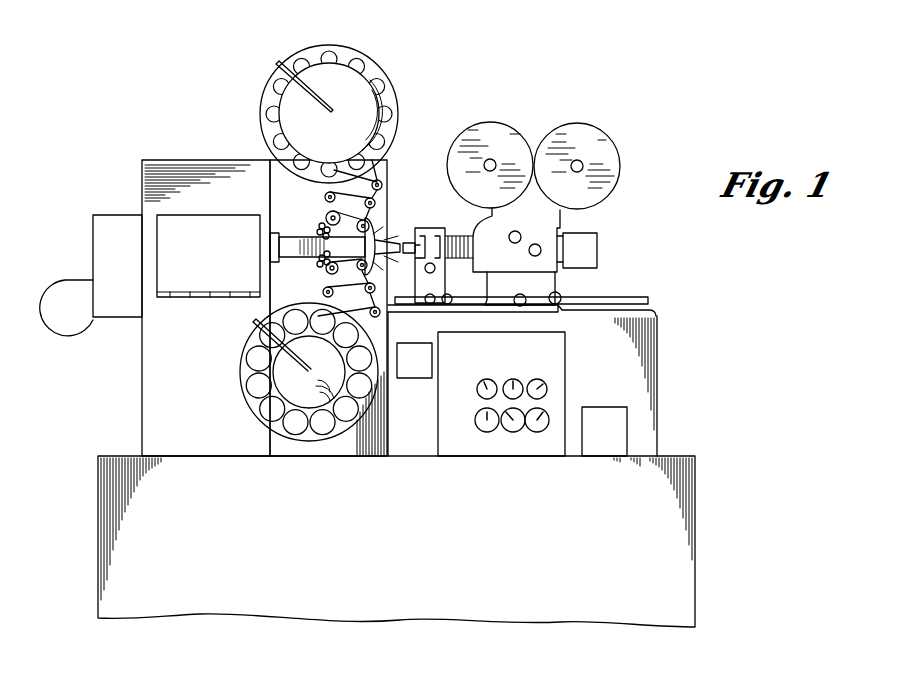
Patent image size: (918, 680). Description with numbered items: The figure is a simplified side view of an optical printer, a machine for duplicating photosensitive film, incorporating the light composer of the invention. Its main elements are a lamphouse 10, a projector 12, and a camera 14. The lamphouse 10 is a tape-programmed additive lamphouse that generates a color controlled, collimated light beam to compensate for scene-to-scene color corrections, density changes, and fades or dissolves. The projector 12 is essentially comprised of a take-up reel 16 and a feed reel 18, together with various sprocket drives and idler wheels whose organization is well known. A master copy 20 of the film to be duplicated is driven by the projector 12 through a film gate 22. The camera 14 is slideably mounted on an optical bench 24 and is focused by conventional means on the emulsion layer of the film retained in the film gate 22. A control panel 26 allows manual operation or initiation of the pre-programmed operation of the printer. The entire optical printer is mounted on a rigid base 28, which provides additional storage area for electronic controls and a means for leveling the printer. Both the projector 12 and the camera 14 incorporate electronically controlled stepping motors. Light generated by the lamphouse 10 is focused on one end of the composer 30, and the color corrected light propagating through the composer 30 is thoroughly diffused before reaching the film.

The lamphouse 10 is at (160, 174).
The projector 12 is at (403, 124).
The camera 14 is at (597, 210).
The take-up reel 16 is at (317, 434).
The feed reel 18 is at (317, 95).
The master copy 20 is at (298, 110).
The film gate 22 is at (372, 247).
The optical bench 24 is at (648, 297).
The control panel 26 is at (555, 375).
The rigid base 28 is at (672, 514).
The composer 30 is at (293, 258).